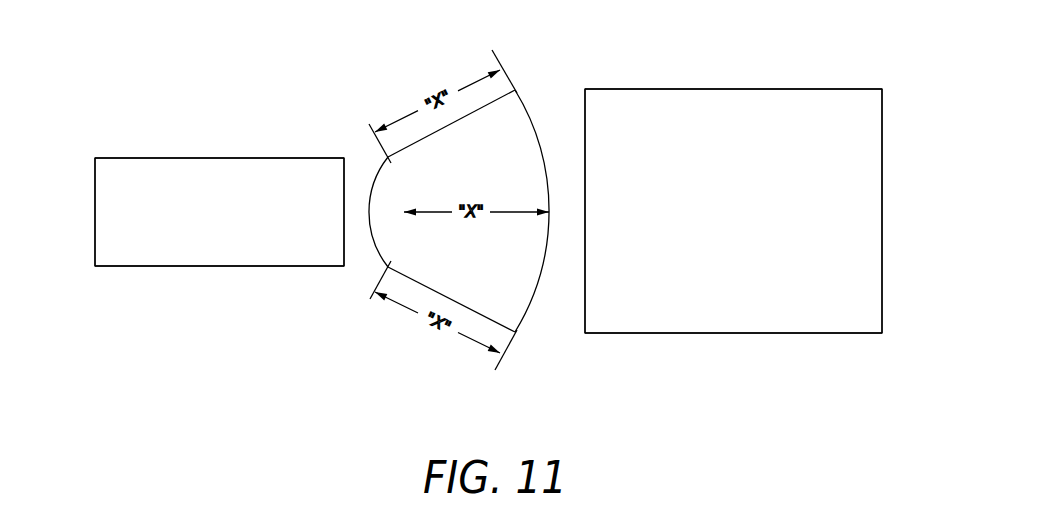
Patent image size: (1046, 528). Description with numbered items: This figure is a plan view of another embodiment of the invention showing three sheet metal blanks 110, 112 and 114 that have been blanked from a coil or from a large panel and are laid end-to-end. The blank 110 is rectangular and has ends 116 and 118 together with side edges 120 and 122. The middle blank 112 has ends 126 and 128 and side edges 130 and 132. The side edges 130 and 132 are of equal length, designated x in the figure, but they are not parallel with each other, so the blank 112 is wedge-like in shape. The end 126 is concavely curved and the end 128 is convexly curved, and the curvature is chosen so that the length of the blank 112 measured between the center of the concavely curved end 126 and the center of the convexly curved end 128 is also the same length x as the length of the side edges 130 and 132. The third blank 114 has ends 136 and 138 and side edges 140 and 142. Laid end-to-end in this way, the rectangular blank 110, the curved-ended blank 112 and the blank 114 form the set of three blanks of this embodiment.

The sheet metal blank 110 is at (172, 168).
The sheet metal blank 112 is at (422, 148).
The sheet metal blank 114 is at (705, 107).
The end 116 is at (95, 177).
The end 118 is at (344, 170).
The side edge 120 is at (198, 267).
The side edge 122 is at (232, 158).
The end 126 is at (398, 238).
The end 128 is at (535, 290).
The side edge 130 is at (503, 343).
The side edge 132 is at (488, 100).
The end 136 is at (585, 126).
The end 138 is at (882, 157).
The side edge 140 is at (728, 333).
The side edge 142 is at (817, 89).